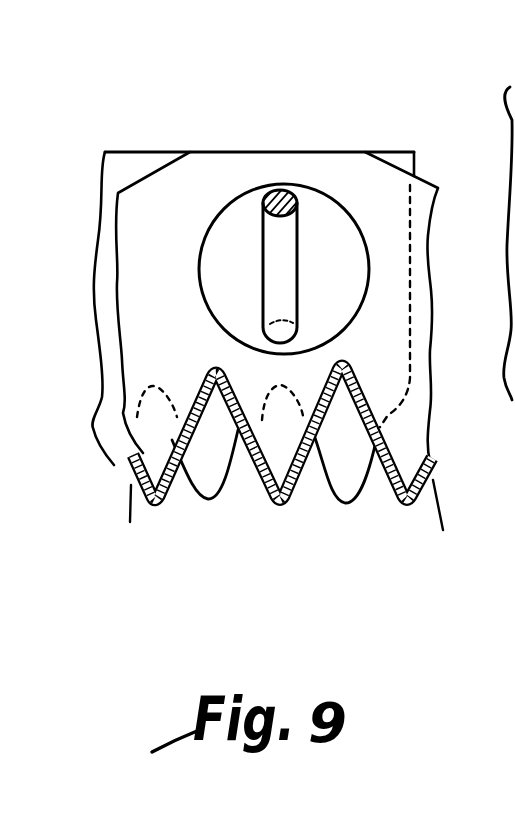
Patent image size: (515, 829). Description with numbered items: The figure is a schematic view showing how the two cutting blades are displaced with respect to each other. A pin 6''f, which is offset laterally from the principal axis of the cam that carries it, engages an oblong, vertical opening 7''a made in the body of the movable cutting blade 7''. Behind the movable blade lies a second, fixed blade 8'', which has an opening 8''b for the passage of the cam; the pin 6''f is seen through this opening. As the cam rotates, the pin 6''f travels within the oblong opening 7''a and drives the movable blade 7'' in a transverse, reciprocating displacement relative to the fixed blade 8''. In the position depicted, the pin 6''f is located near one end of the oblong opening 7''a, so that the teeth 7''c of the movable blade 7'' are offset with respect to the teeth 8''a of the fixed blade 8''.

The movable cutting blade 7'' is at (258, 282).
The oblong vertical opening 7''a is at (282, 284).
The teeth of the movable blade 7''c is at (288, 508).
The pin 6''f is at (251, 325).
The fixed blade 8'' is at (239, 308).
The teeth of the fixed blade 8''a is at (280, 531).
The opening for the cam 8''b is at (202, 271).